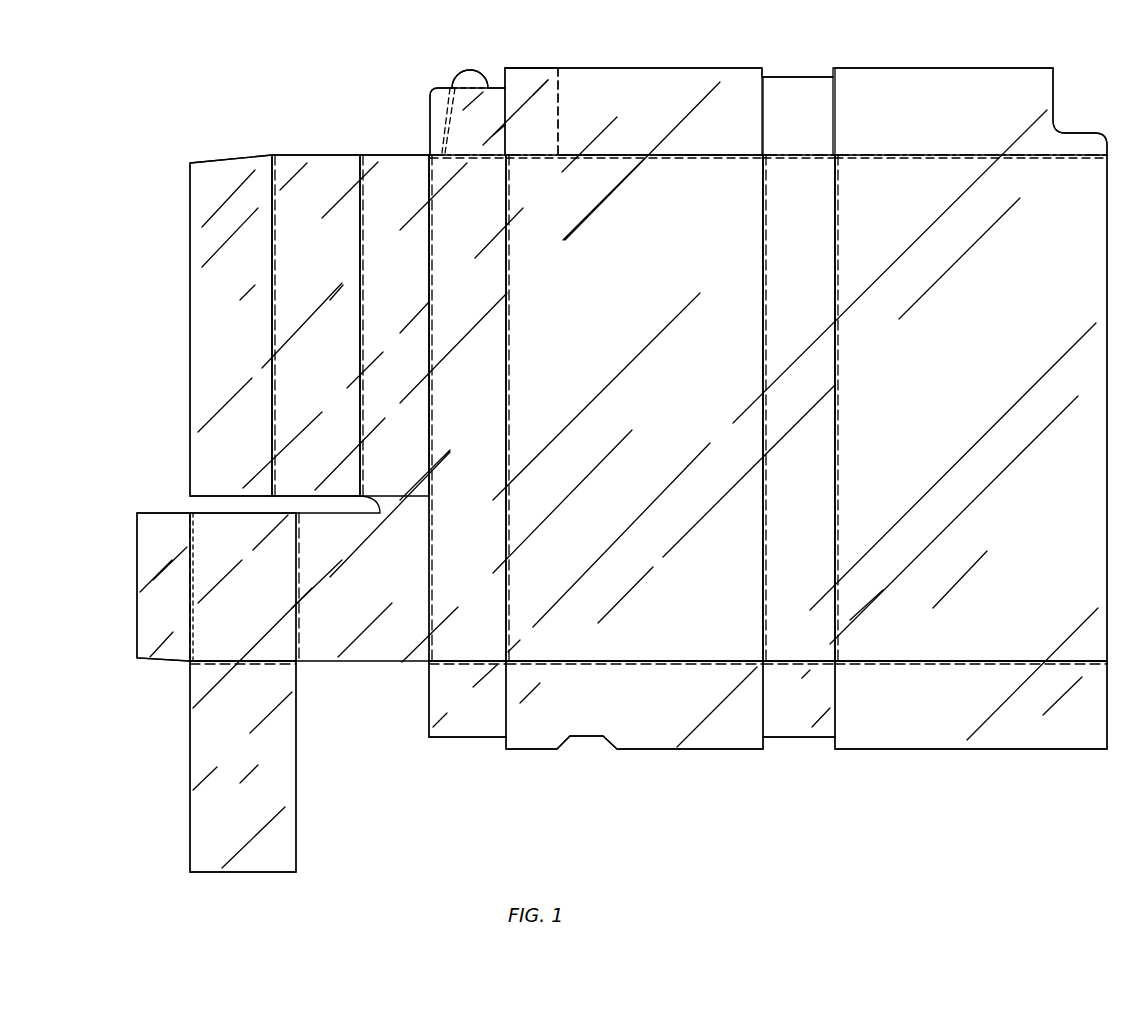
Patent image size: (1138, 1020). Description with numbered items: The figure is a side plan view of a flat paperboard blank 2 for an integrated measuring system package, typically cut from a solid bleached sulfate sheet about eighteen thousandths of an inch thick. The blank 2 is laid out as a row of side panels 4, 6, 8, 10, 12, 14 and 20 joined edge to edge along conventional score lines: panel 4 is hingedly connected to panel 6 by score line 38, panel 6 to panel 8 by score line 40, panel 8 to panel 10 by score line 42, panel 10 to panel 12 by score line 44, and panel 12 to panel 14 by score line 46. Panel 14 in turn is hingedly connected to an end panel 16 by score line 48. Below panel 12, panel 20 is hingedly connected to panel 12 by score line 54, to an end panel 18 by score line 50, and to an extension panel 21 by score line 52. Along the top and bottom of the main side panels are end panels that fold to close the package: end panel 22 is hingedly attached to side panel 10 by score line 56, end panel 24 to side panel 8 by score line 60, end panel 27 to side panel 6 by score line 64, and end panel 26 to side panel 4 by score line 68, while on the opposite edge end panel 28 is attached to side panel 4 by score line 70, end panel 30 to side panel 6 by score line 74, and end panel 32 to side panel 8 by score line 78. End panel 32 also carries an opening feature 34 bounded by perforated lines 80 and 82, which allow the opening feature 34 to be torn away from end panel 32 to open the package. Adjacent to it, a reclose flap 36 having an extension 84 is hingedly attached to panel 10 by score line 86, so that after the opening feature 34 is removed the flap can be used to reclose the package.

The paperboard blank 2 is at (877, 797).
The side panel 4 is at (962, 386).
The side panel 6 is at (799, 398).
The side panel 8 is at (619, 394).
The side panel 10 is at (473, 396).
The side panel 12 is at (399, 394).
The side panel 14 is at (319, 393).
The end panel 16 is at (231, 389).
The end panel 18 is at (169, 559).
The side panel 20 is at (244, 599).
The extension panel 21 is at (244, 729).
The end panel 22 is at (473, 711).
The end panel 24 is at (628, 709).
The end panel 26 is at (961, 709).
The end panel 27 is at (803, 709).
The end panel 28 is at (939, 104).
The end panel 30 is at (801, 104).
The end panel 32 is at (656, 96).
The opening feature 34 is at (539, 119).
The reclose flap 36 is at (479, 134).
The score line 38 is at (856, 357).
The score line 40 is at (762, 268).
The score line 42 is at (507, 277).
The score line 44 is at (430, 292).
The score line 46 is at (360, 285).
The score line 48 is at (274, 255).
The score line 50 is at (195, 529).
The score line 52 is at (212, 658).
The score line 54 is at (297, 567).
The score line 56 is at (453, 660).
The score line 60 is at (602, 660).
The score line 64 is at (777, 660).
The score line 68 is at (905, 660).
The score line 70 is at (890, 158).
The score line 74 is at (773, 157).
The score line 78 is at (697, 157).
The perforated line 80 is at (552, 84).
The perforated line 82 is at (522, 153).
The extension 84 is at (470, 75).
The score line 86 is at (452, 160).